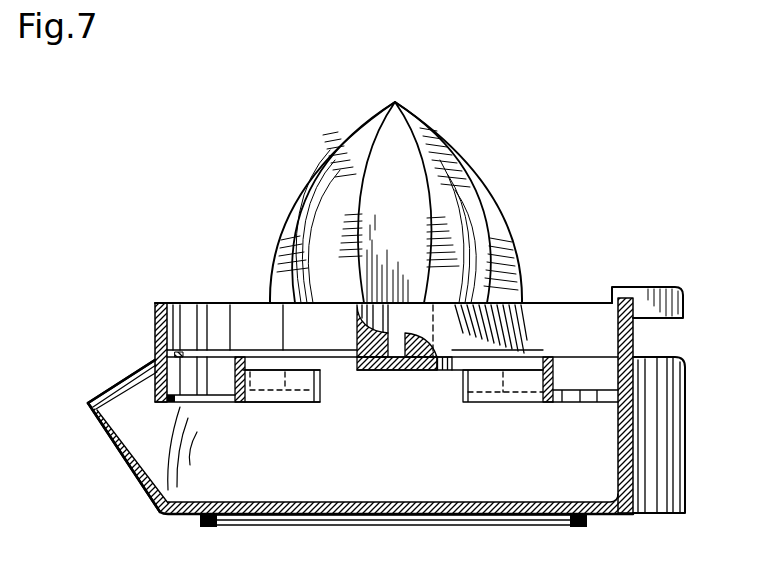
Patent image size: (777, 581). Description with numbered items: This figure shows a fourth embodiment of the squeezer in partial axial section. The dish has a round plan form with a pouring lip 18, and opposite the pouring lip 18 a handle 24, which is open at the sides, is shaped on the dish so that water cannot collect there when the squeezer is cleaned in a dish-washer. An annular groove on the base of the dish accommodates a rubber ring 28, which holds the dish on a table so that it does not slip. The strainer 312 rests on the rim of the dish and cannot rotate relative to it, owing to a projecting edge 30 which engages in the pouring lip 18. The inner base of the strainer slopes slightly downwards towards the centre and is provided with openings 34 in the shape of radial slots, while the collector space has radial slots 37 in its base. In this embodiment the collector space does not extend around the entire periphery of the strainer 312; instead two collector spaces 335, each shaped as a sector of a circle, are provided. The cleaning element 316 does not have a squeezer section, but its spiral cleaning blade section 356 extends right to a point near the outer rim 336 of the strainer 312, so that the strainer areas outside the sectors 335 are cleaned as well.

The outer rim 336 is at (150, 306).
The projecting edge 30 is at (152, 351).
The strainer 312 is at (150, 355).
The pouring lip 18 is at (86, 422).
The radial slots 37 is at (212, 398).
The collector spaces 335 is at (306, 384).
The openings 34 is at (337, 365).
The cleaning element 316 is at (549, 299).
The spiral cleaning blade section 356 is at (588, 316).
The handle 24 is at (676, 490).
The rubber ring 28 is at (208, 527).